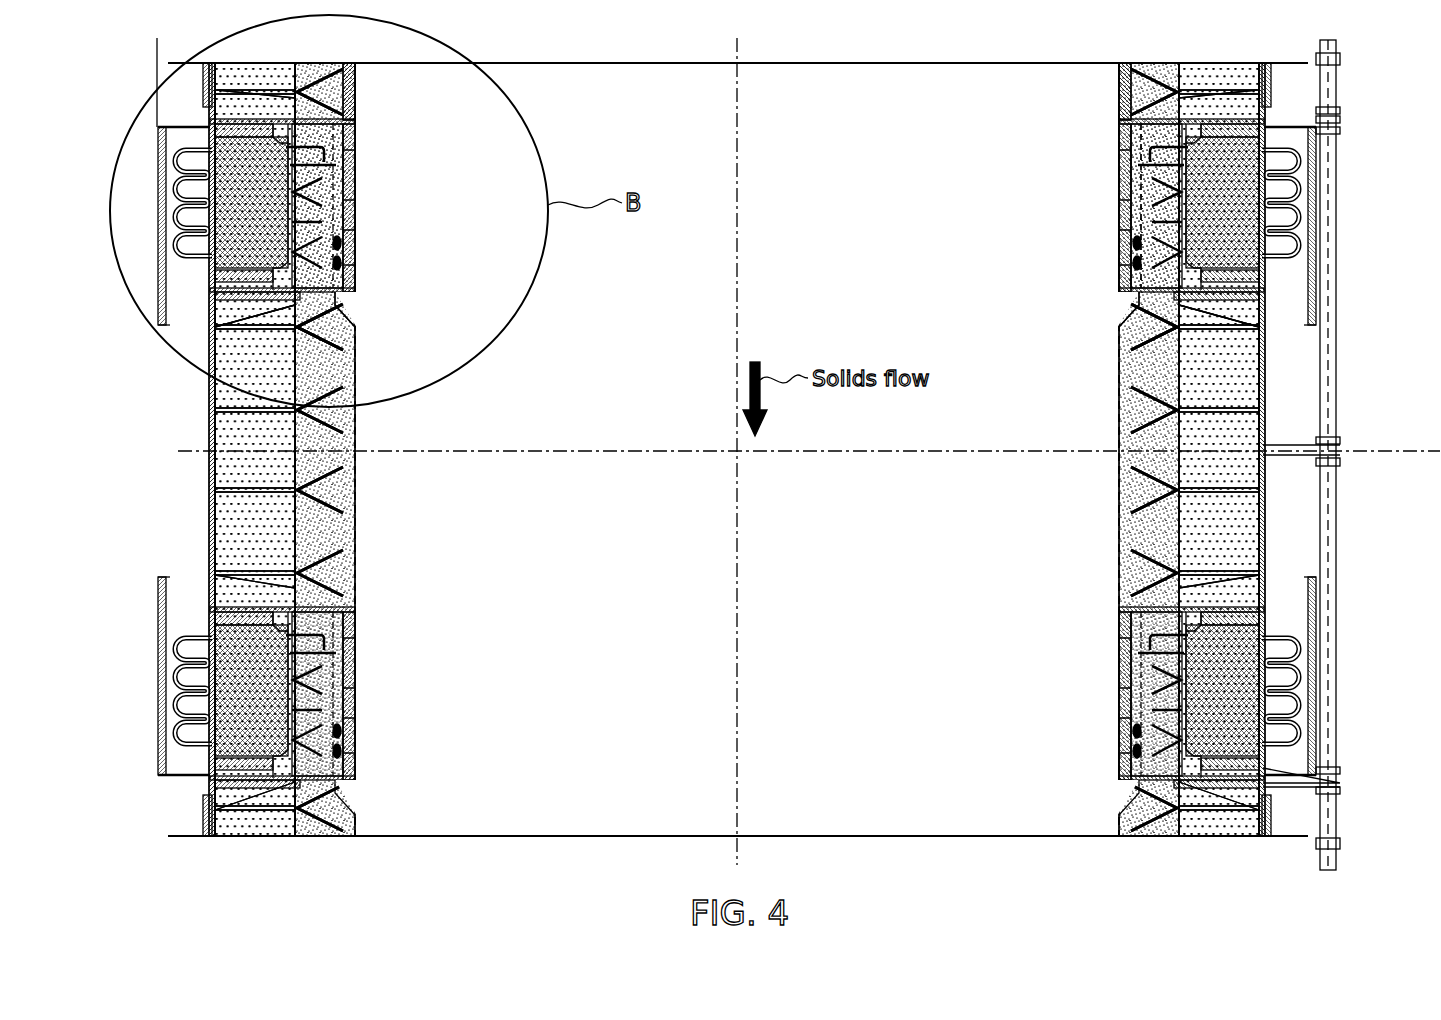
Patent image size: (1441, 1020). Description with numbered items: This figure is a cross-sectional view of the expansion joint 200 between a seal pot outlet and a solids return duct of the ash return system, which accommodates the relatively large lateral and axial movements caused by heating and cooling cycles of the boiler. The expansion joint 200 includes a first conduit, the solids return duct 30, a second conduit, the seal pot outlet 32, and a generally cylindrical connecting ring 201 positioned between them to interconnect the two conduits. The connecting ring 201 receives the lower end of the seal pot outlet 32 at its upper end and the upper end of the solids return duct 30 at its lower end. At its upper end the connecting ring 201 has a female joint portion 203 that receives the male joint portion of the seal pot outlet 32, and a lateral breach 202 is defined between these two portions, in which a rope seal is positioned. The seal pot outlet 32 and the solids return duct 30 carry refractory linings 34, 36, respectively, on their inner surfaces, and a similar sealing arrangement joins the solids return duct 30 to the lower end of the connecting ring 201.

The refractory lining 34 is at (360, 75).
The seal pot outlet 32 is at (358, 107).
The expansion joint 200 is at (366, 204).
The lateral breach 202 is at (350, 294).
The solids return duct 30 is at (360, 315).
The refractory lining 36 is at (360, 343).
The female joint portion 203 is at (1125, 208).
The connecting ring 201 is at (232, 428).